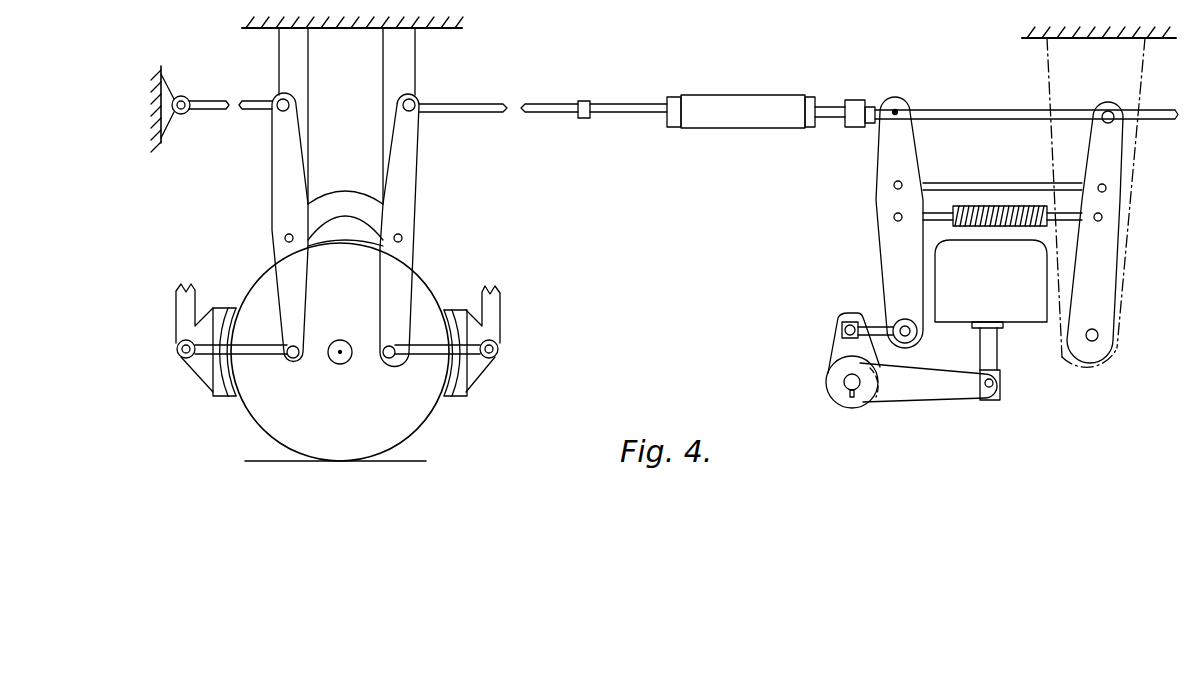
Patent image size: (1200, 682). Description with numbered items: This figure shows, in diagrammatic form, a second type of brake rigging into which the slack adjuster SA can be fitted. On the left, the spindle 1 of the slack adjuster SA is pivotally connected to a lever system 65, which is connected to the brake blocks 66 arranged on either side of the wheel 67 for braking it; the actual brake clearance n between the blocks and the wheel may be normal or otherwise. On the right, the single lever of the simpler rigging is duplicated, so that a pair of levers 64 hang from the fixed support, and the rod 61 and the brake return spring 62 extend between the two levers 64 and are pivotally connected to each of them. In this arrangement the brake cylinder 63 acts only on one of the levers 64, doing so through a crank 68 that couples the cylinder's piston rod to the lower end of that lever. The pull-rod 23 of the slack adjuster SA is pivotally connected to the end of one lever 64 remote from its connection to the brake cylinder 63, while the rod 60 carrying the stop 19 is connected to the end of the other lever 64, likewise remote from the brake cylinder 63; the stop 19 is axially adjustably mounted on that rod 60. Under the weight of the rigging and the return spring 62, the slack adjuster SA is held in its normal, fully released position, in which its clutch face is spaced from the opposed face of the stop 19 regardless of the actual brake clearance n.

The spindle 1 is at (484, 107).
The lever system 65 is at (402, 202).
The wheel 67 is at (282, 427).
The brake blocks 66 is at (203, 369).
The brake clearance n is at (430, 401).
The slack adjuster SA is at (731, 141).
The pull-rod 23 is at (832, 118).
The stop 19 is at (855, 100).
The rod 60 is at (993, 110).
The rod 61 is at (1029, 163).
The brake return spring 62 is at (967, 207).
The brake cylinder 63 is at (1023, 317).
The levers 64 is at (888, 232).
The crank 68 is at (837, 347).